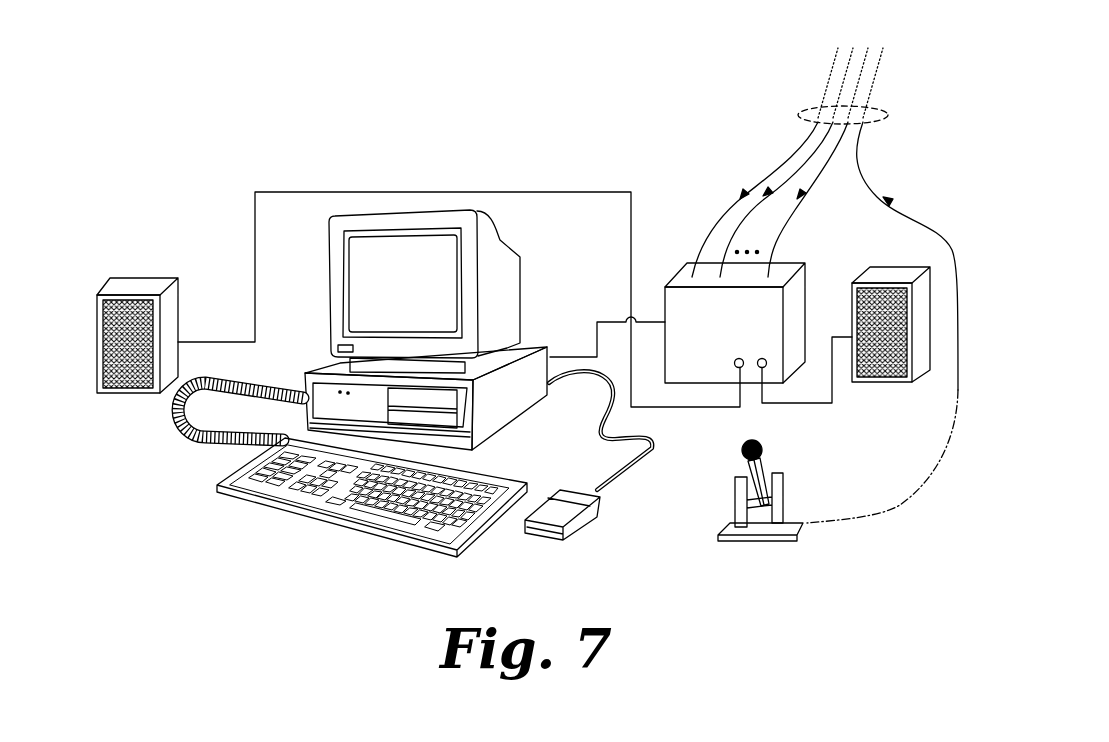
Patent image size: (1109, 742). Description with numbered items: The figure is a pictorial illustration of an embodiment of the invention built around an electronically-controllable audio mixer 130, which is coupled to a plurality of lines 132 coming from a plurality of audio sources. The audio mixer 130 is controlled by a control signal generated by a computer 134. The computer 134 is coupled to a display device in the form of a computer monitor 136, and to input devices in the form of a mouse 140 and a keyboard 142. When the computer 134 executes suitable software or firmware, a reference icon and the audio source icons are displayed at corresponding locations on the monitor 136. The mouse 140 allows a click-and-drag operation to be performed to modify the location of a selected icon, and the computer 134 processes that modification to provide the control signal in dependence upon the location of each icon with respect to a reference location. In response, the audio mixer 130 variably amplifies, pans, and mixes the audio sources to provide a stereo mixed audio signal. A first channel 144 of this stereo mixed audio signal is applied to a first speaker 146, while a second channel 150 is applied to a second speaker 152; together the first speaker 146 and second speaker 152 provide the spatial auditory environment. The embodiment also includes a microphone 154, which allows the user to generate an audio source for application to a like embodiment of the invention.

The electronically-controllable audio mixer 130 is at (667, 282).
The lines 132 is at (800, 118).
The computer 134 is at (550, 357).
The computer monitor 136 is at (523, 257).
The mouse 140 is at (597, 520).
The keyboard 142 is at (210, 485).
The first channel 144 is at (253, 223).
The first speaker 146 is at (152, 277).
The second channel 150 is at (832, 405).
The second speaker 152 is at (878, 267).
The microphone 154 is at (762, 452).